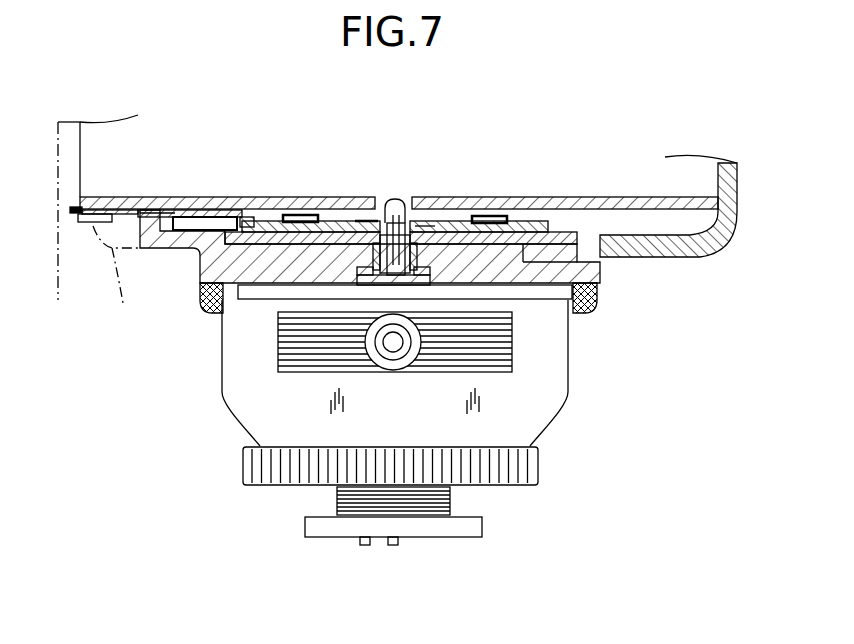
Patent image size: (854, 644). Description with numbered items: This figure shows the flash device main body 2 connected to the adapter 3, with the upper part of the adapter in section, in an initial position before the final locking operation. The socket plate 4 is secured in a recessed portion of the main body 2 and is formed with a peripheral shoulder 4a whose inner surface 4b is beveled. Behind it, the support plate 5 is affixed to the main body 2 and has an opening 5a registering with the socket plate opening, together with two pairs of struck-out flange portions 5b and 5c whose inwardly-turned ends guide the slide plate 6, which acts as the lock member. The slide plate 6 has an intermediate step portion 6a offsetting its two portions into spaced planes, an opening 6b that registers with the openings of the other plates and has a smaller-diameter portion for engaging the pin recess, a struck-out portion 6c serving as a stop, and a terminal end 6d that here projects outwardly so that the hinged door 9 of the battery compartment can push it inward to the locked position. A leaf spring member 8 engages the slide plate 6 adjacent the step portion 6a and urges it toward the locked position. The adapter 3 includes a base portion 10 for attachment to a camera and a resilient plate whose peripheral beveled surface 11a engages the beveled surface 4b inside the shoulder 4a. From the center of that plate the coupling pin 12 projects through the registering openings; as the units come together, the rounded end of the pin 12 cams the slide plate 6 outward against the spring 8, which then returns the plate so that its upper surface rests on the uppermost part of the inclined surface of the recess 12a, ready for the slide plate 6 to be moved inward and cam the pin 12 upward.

The main body 2 is at (712, 235).
The adapter 3 is at (540, 395).
The socket plate 4 is at (532, 295).
The peripheral shoulder 4a is at (215, 303).
The beveled inner surface 4b is at (570, 288).
The support plate 5 is at (548, 205).
The opening 5a is at (365, 222).
The struck-out flange portions 5b is at (300, 217).
The struck-out flange portions 5c is at (520, 210).
The slide plate 6 is at (438, 227).
The intermediate step portion 6a is at (240, 214).
The opening 6b is at (423, 223).
The struck-out portion 6c is at (160, 210).
The terminal end 6d is at (72, 213).
The leaf spring member 8 is at (200, 218).
The hinged door 9 is at (116, 278).
The base portion 10 is at (447, 525).
The peripheral beveled surface 11a is at (253, 292).
The coupling pin 12 is at (458, 223).
The recess 12a is at (390, 208).